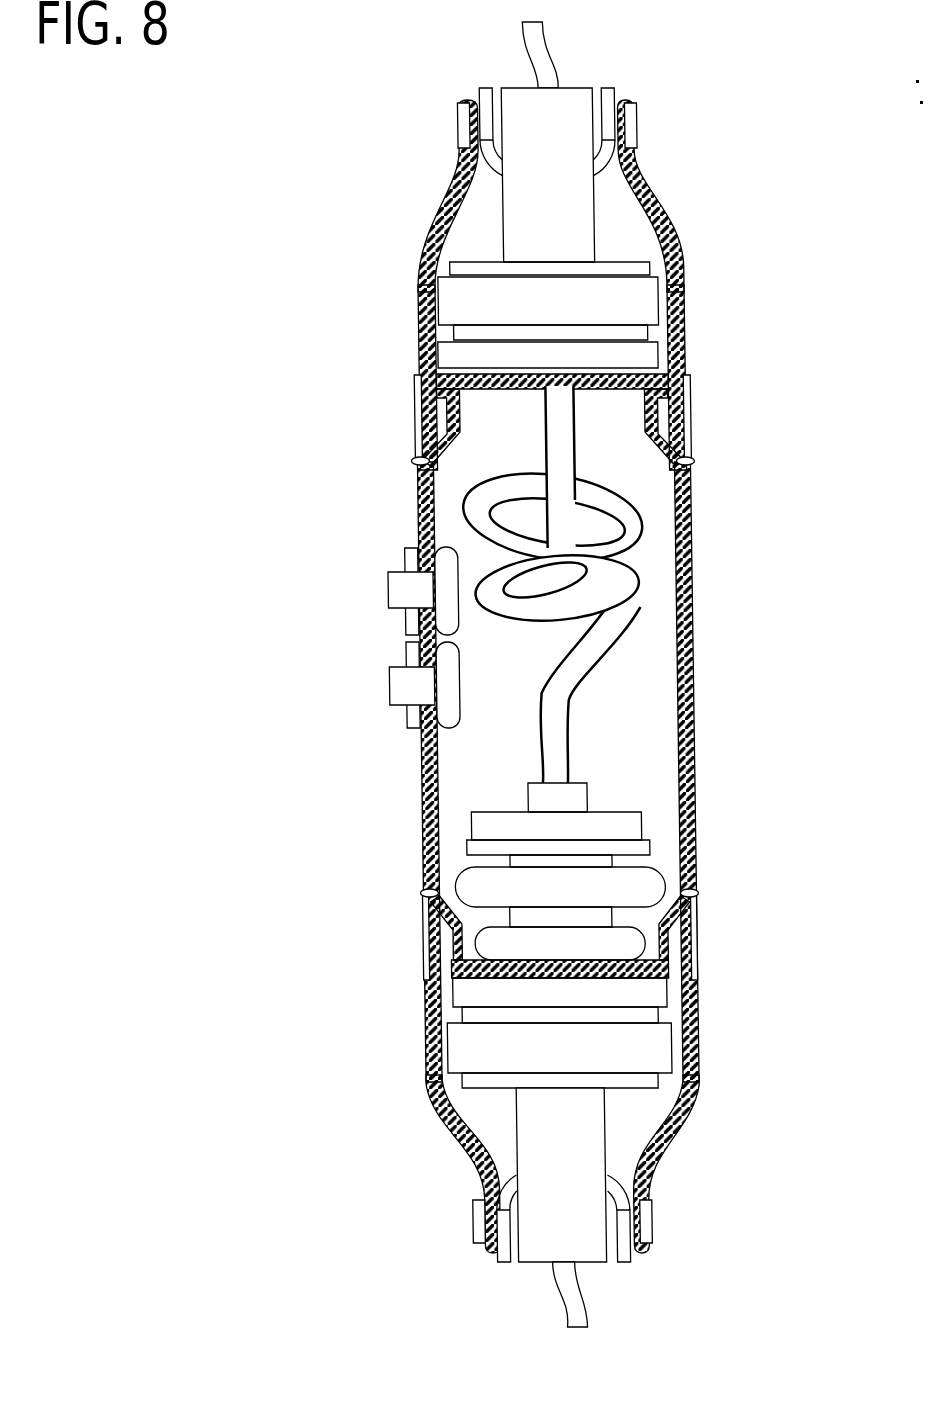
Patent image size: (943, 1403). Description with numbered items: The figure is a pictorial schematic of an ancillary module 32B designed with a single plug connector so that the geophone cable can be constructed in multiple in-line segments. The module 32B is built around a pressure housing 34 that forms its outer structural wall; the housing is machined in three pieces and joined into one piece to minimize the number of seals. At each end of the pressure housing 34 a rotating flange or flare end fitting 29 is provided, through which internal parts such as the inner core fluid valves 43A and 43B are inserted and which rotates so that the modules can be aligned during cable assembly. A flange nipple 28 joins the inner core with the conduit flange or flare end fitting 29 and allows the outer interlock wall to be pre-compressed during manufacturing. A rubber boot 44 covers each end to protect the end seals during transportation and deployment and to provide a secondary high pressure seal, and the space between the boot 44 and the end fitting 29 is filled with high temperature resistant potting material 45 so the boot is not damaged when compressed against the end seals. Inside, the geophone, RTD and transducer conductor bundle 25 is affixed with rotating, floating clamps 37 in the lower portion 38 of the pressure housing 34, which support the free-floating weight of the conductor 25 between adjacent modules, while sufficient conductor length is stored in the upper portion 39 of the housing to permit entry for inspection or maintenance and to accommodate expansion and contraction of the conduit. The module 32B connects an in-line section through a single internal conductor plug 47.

The flange nipple 28 is at (590, 205).
The rubber boot 44 is at (667, 222).
The high temperature resistant potting material 45 is at (489, 251).
The flange or flare end fitting 29 is at (648, 298).
The module 32B is at (382, 360).
The pressure housing 34 is at (408, 473).
The upper portion of the pressure housing 39 is at (624, 449).
The inner core fluid valve 43A is at (380, 590).
The inner core fluid valve 43B is at (380, 688).
The conductor bundle 25 is at (589, 660).
The internal conductor plug 47 is at (491, 812).
The lower portion of the pressure housing 38 is at (637, 776).
The rotating, floating clamps 37 is at (560, 956).